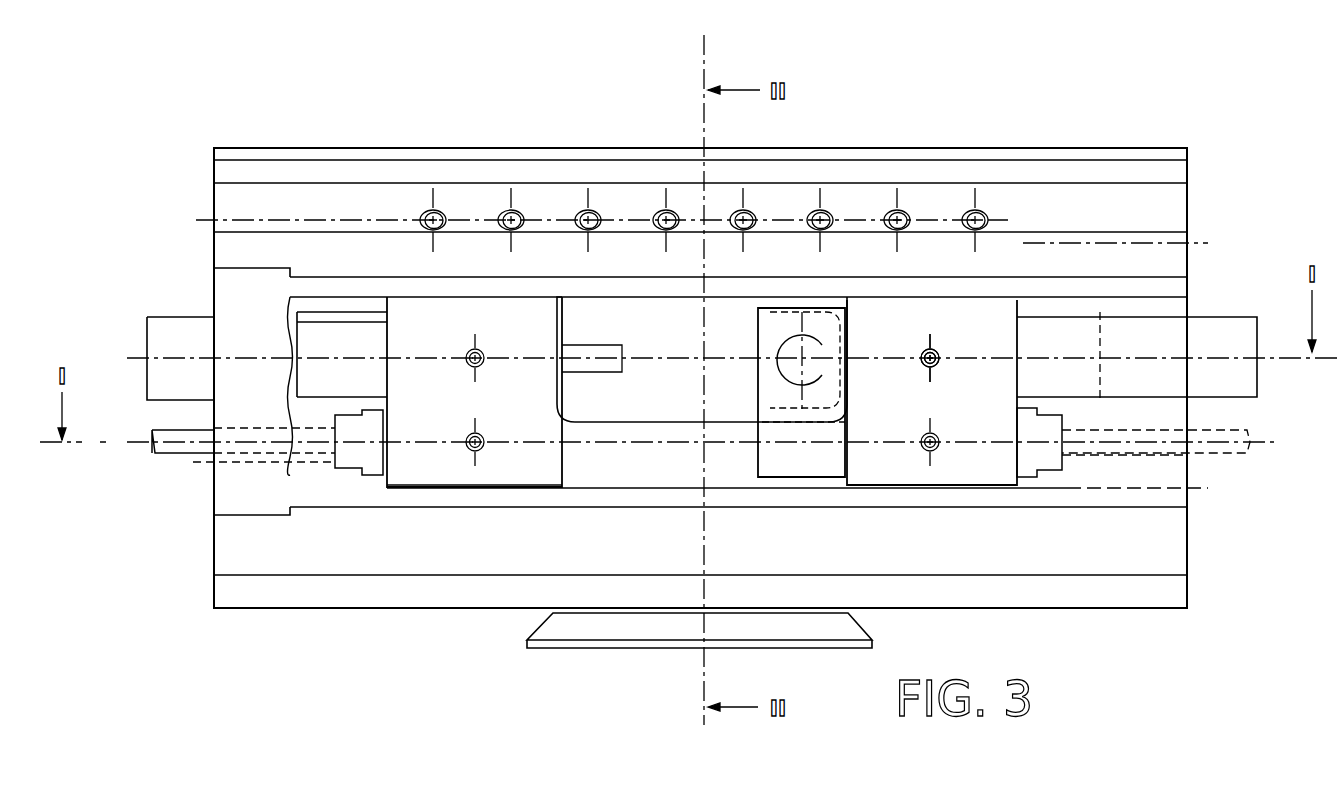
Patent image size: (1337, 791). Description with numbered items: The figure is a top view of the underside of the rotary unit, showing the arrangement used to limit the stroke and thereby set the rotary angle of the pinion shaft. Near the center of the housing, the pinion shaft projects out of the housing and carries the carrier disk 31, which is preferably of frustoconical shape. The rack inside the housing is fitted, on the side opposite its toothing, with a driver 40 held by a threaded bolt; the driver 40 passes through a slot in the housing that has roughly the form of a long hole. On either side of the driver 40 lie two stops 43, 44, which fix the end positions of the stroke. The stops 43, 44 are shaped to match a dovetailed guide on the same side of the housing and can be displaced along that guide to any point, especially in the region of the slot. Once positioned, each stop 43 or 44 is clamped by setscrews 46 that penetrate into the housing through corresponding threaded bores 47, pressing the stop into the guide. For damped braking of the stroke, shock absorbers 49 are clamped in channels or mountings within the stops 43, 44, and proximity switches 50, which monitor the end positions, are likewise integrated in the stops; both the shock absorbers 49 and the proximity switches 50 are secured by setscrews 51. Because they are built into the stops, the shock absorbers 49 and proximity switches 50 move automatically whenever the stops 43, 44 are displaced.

The carrier disk 31 is at (538, 645).
The driver 40 is at (757, 458).
The stop 43 is at (972, 482).
The stop 44 is at (433, 478).
The setscrew 46 is at (511, 210).
The threaded bore 47 is at (587, 210).
The shock absorber 49 is at (1190, 333).
The proximity switch 50 is at (1048, 455).
The setscrew 51 is at (940, 434).